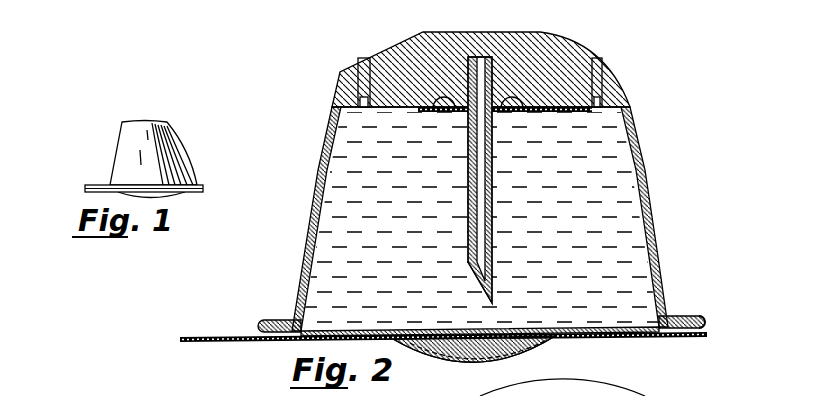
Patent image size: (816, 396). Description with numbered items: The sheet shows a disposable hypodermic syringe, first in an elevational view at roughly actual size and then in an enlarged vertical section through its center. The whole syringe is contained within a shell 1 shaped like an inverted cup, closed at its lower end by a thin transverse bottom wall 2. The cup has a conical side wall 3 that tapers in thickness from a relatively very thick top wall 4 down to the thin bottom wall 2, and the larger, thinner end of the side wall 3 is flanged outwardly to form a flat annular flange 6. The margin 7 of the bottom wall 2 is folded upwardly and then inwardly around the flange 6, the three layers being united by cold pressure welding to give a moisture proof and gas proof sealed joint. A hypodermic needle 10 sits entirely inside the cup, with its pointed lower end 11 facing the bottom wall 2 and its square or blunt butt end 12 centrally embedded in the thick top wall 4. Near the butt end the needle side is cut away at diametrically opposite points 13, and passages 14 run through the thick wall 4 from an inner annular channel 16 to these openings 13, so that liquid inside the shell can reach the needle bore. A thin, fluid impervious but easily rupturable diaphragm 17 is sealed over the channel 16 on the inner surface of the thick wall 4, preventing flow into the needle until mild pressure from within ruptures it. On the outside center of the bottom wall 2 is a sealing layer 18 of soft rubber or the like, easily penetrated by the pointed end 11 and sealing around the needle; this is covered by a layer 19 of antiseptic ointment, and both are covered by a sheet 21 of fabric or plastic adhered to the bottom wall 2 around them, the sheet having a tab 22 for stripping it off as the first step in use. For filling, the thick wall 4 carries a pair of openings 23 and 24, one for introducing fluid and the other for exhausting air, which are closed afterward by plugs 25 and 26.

In FIG. 1, the shell 1 is at (193, 141).
In FIG. 2, the shell 1 is at (652, 177).
In FIG. 2, the bottom wall 2 is at (423, 331).
In FIG. 2, the side wall 3 is at (661, 258).
In FIG. 2, the top wall 4 is at (392, 53).
In FIG. 2, the flange 6 is at (679, 316).
In FIG. 2, the margin 7 is at (704, 316).
In FIG. 2, the hypodermic needle 10 is at (494, 210).
In FIG. 2, the pointed lower end 11 is at (494, 303).
In FIG. 2, the butt end 12 is at (457, 105).
In FIG. 2, the cut-away openings 13 is at (468, 74).
In FIG. 2, the passages 14 is at (452, 94).
In FIG. 2, the annular channel 16 is at (512, 112).
In FIG. 2, the diaphragm 17 is at (453, 112).
In FIG. 2, the sealing layer 18 is at (543, 347).
In FIG. 2, the antiseptic ointment layer 19 is at (478, 362).
In FIG. 1, the sheet 21 is at (187, 195).
In FIG. 2, the sheet 21 is at (633, 338).
In FIG. 1, the tab 22 is at (95, 183).
In FIG. 2, the tab 22 is at (203, 337).
In FIG. 2, the opening 23 is at (365, 112).
In FIG. 2, the opening 24 is at (597, 110).
In FIG. 2, the plug 25 is at (338, 78).
In FIG. 2, the plug 26 is at (602, 75).